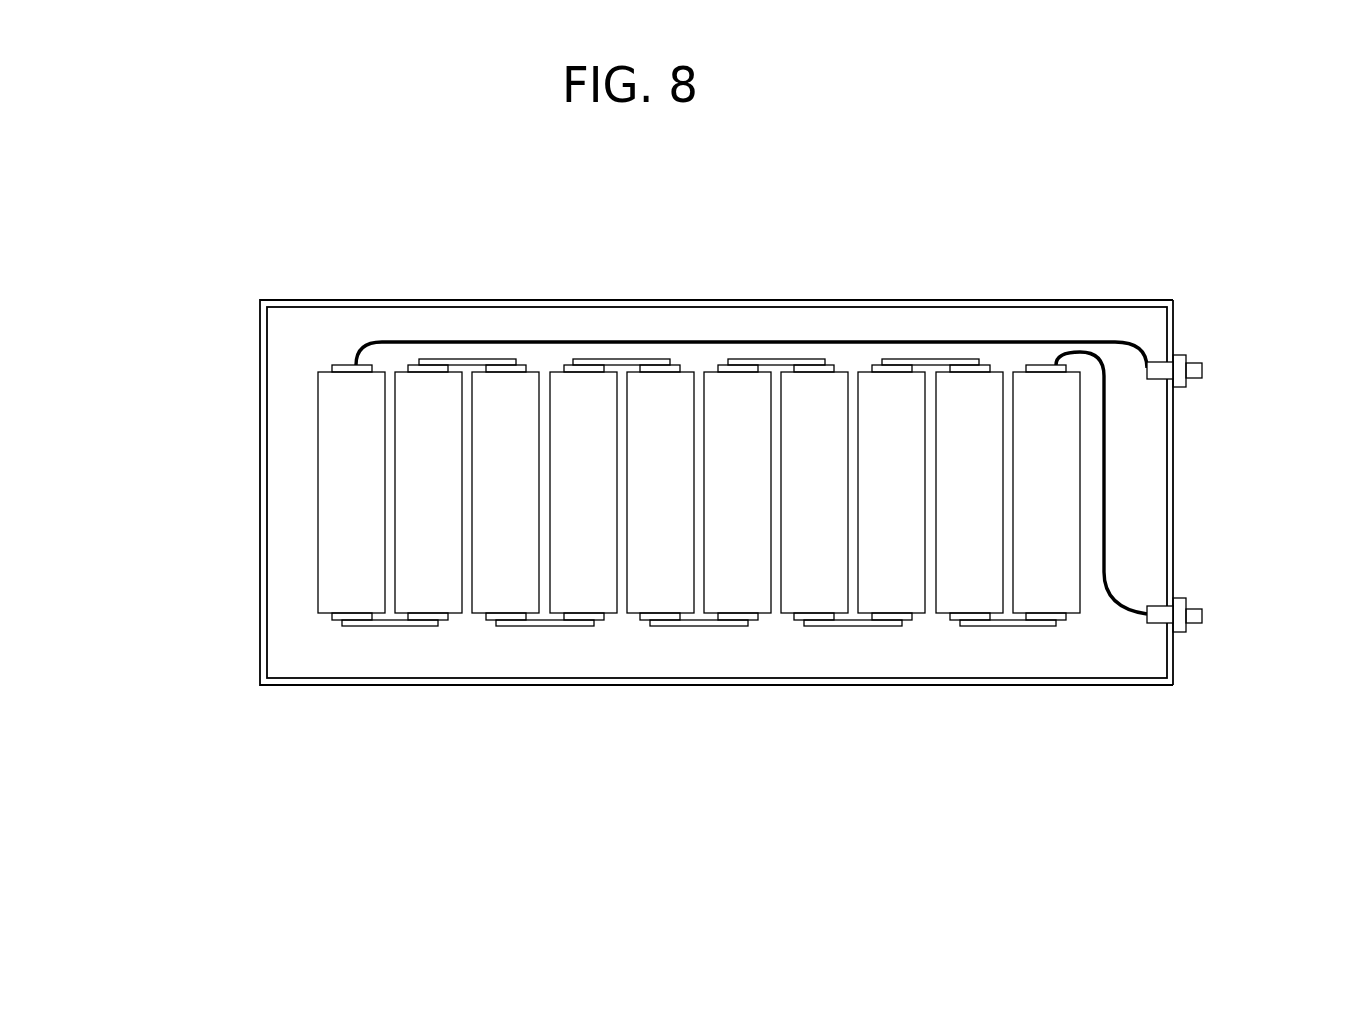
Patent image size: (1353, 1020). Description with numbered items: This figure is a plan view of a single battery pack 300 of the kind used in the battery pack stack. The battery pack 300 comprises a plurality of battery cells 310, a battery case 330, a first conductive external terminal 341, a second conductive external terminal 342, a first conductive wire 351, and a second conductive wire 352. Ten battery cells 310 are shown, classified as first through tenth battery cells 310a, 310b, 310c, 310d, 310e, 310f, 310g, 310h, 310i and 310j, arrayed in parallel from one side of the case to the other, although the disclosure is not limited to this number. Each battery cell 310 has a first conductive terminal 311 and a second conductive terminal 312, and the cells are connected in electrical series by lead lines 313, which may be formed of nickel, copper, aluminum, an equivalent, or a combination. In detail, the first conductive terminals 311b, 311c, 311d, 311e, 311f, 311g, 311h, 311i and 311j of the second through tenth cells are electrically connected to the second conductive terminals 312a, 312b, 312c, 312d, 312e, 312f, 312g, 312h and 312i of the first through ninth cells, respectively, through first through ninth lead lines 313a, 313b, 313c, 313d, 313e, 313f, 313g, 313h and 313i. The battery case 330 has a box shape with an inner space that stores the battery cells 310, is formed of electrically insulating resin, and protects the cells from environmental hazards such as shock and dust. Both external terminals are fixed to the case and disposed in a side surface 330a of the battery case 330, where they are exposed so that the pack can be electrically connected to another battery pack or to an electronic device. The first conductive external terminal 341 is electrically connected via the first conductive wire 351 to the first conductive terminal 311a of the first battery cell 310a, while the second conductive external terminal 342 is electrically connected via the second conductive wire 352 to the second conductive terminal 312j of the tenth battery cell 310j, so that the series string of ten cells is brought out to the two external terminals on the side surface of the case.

The battery pack 300 is at (178, 207).
The battery cells 310 is at (318, 448).
The first battery cell 310a is at (351, 492).
The second battery cell 310b is at (428, 492).
The third battery cell 310c is at (505, 492).
The fourth battery cell 310d is at (583, 492).
The fifth battery cell 310e is at (660, 492).
The sixth battery cell 310f is at (737, 492).
The seventh battery cell 310g is at (814, 492).
The eighth battery cell 310h is at (891, 492).
The ninth battery cell 310i is at (969, 492).
The tenth battery cell 310j is at (1046, 492).
The first conductive terminal 311 is at (324, 359).
The first conductive terminal of the first battery cell 311a is at (338, 363).
The first conductive terminal of the second battery cell 311b is at (393, 622).
The first conductive terminal of the third battery cell 311c is at (519, 363).
The first conductive terminal of the fourth battery cell 311d is at (599, 622).
The first conductive terminal of the fifth battery cell 311e is at (678, 363).
The first conductive terminal of the sixth battery cell 311f is at (753, 622).
The first conductive terminal of the seventh battery cell 311g is at (832, 363).
The first conductive terminal of the eighth battery cell 311h is at (910, 622).
The first conductive terminal of the ninth battery cell 311i is at (1003, 363).
The first conductive terminal of the tenth battery cell 311j is at (1062, 622).
The second conductive terminal 312 is at (325, 620).
The second conductive terminal of the first battery cell 312a is at (334, 621).
The second conductive terminal of the second battery cell 312b is at (412, 363).
The second conductive terminal of the third battery cell 312c is at (490, 622).
The second conductive terminal of the fourth battery cell 312d is at (567, 363).
The second conductive terminal of the fifth battery cell 312e is at (643, 622).
The second conductive terminal of the sixth battery cell 312f is at (721, 363).
The second conductive terminal of the seventh battery cell 312g is at (797, 622).
The second conductive terminal of the eighth battery cell 312h is at (876, 363).
The second conductive terminal of the ninth battery cell 312i is at (953, 622).
The second conductive terminal of the tenth battery cell 312j is at (1034, 363).
The lead lines 313 is at (424, 212).
The first lead line 313a is at (392, 628).
The second lead line 313b is at (470, 358).
The third lead line 313c is at (545, 628).
The fourth lead line 313d is at (622, 358).
The fifth lead line 313e is at (701, 628).
The sixth lead line 313f is at (776, 358).
The seventh lead line 313g is at (855, 628).
The eighth lead line 313h is at (932, 358).
The ninth lead line 313i is at (1008, 628).
The battery case 330 is at (283, 300).
The side surface of the battery case 330a is at (1173, 431).
The first conductive external terminal 341 is at (1182, 353).
The second conductive external terminal 342 is at (1182, 598).
The first conductive wire 351 is at (1113, 342).
The second conductive wire 352 is at (1106, 478).